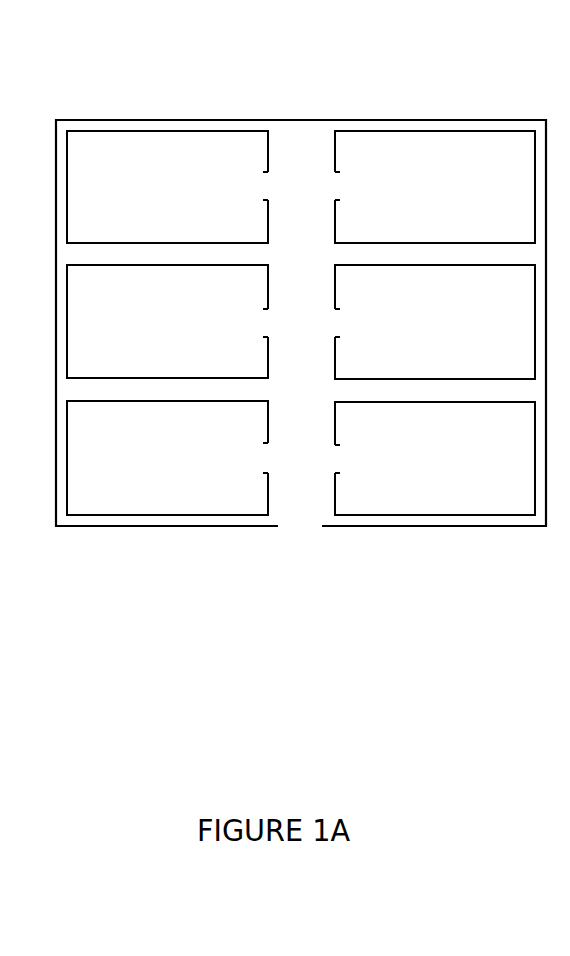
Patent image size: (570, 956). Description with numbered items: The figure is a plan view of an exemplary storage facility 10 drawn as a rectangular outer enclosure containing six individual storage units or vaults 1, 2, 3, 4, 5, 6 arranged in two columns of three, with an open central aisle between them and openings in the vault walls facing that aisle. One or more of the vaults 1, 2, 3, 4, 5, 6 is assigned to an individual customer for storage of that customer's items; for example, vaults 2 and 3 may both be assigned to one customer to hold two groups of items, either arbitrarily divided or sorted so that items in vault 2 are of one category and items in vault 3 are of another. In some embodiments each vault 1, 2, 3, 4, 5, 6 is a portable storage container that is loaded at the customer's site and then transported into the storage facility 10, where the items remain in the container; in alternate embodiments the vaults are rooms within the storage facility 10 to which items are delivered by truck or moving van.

The storage facility 10 is at (108, 106).
The vault 1 is at (167, 187).
The vault 2 is at (167, 321).
The vault 3 is at (167, 458).
The vault 4 is at (435, 187).
The vault 5 is at (435, 322).
The vault 6 is at (435, 458).